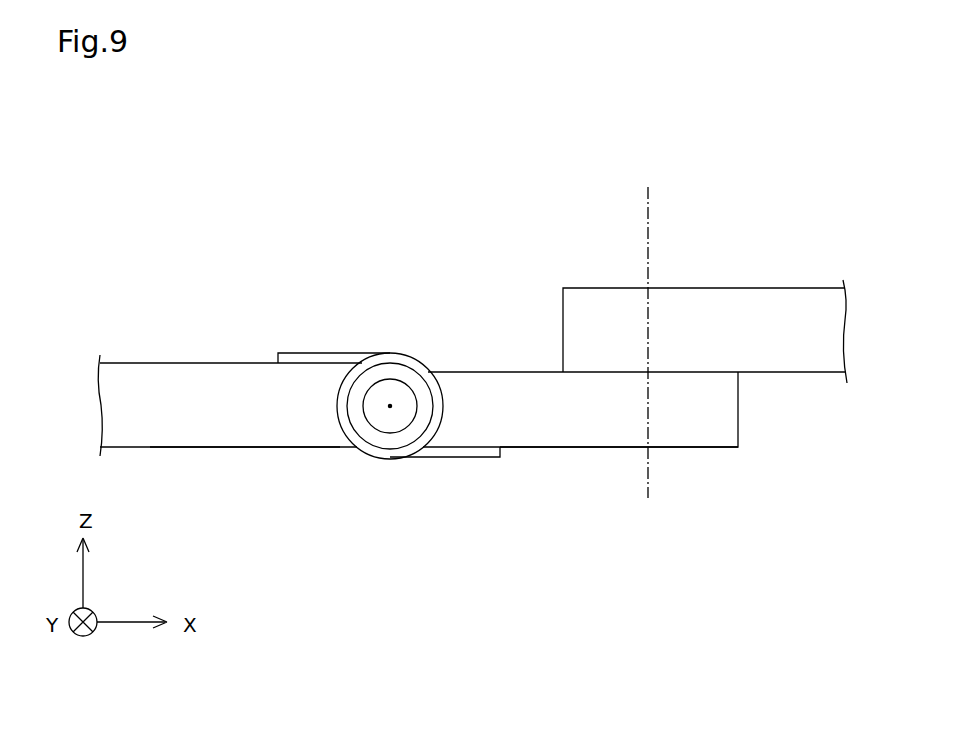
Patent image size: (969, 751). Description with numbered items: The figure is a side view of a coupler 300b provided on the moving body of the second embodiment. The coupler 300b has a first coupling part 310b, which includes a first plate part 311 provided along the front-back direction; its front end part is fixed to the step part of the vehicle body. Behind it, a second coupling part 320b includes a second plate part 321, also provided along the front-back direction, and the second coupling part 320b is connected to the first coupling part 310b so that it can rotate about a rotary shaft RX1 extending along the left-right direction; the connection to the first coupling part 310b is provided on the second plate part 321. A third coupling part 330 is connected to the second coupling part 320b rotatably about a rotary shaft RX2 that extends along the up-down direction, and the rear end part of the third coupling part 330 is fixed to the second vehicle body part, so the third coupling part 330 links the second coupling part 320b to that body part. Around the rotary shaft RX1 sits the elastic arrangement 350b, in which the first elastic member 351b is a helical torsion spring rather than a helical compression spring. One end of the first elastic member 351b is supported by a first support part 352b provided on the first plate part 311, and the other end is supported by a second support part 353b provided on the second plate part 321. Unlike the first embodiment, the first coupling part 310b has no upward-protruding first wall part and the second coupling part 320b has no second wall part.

The coupler 300b is at (132, 156).
The first coupling part 310b is at (180, 360).
The first plate part 311 is at (232, 450).
The first support part 352b is at (301, 353).
The first elastic member 351b is at (408, 357).
The elastic mechanism 350b is at (431, 375).
The rotary shaft RX1 is at (390, 408).
The second support part 353b is at (474, 457).
The second coupling part 320b is at (678, 450).
The second plate part 321 is at (573, 450).
The third coupling part 330 is at (703, 288).
The rotary shaft RX2 is at (650, 200).